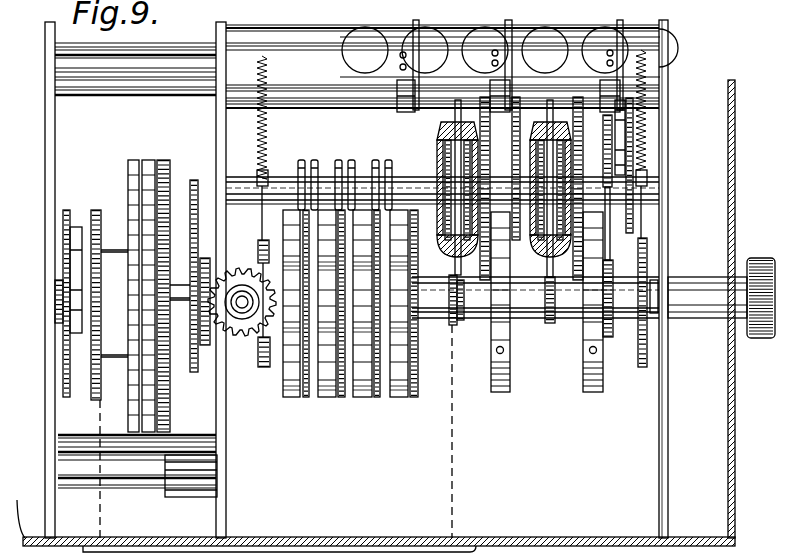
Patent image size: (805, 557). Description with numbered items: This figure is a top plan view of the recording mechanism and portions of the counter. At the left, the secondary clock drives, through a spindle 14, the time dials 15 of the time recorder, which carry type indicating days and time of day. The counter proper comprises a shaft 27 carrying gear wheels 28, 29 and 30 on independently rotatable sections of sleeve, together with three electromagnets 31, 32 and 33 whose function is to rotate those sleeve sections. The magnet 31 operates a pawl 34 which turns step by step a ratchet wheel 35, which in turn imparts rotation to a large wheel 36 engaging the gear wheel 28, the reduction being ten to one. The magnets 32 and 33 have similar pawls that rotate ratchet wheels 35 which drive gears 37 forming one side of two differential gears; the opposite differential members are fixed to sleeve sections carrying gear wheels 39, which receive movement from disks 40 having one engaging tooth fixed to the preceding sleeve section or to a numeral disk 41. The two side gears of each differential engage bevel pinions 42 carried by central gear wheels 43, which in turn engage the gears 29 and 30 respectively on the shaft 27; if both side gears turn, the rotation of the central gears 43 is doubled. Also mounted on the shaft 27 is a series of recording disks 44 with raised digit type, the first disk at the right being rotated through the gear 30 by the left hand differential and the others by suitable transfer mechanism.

The spindle 14 is at (242, 303).
The time dials 15 is at (149, 283).
The shaft 27 is at (700, 320).
The gear wheel 28 is at (613, 348).
The gear wheel 29 is at (548, 325).
The gear wheel 30 is at (452, 326).
The electromagnet 31 is at (672, 60).
The electromagnet 32 is at (462, 60).
The electromagnet 33 is at (343, 57).
The pawl 34 is at (630, 133).
The ratchet wheel 35 is at (627, 205).
The large wheel 36 is at (613, 240).
The differential side gear 37 is at (445, 152).
The gear wheel 39 is at (572, 152).
The disk with one engaging tooth 40 is at (462, 322).
The numeral disk 41 is at (501, 392).
The bevel pinion 42 is at (448, 262).
The central gear wheel 43 is at (440, 245).
The recording disk 44 is at (367, 390).